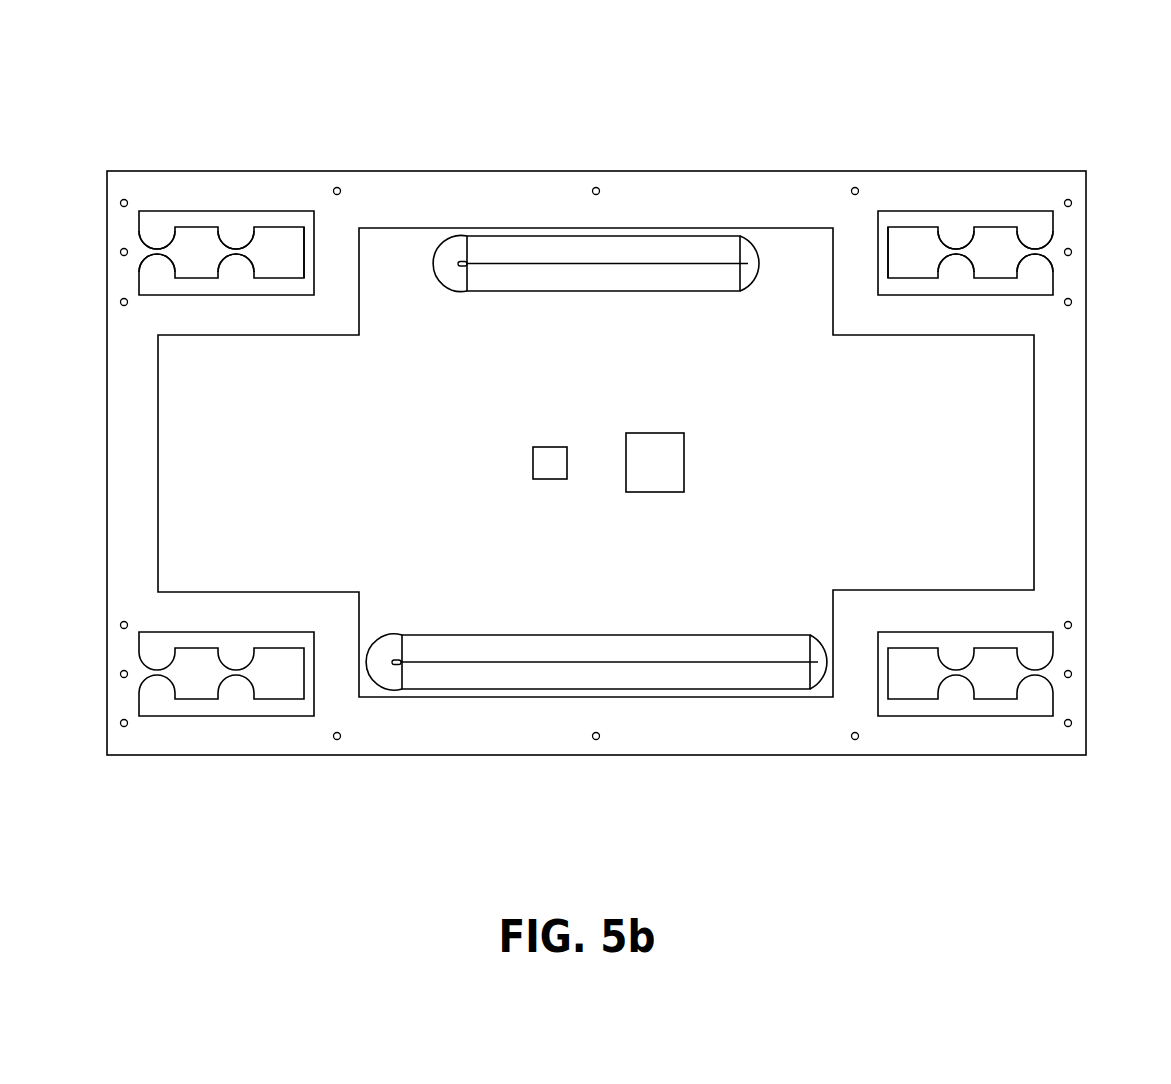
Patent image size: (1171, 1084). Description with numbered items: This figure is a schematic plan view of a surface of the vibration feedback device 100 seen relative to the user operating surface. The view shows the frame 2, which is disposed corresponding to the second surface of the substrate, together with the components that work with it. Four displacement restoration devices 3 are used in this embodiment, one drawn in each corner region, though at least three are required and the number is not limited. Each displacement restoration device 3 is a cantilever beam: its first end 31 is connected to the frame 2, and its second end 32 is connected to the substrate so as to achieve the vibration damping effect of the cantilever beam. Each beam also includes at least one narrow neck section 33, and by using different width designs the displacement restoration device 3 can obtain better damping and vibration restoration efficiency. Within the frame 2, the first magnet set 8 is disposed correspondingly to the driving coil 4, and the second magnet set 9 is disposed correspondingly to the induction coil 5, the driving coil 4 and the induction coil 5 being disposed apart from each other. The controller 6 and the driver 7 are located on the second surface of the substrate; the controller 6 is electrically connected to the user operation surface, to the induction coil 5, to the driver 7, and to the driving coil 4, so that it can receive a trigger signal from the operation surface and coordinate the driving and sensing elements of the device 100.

The vibration feedback device 100 is at (857, 107).
The frame 2 is at (645, 737).
The displacement restoration device 3 is at (264, 230).
The first end 31 is at (147, 252).
The second end 32 is at (308, 250).
The narrow neck section 33 is at (235, 253).
The driving coil 4 is at (748, 263).
The induction coil 5 is at (818, 662).
The controller 6 is at (547, 458).
The driver 7 is at (656, 452).
The first magnet set 8 is at (579, 279).
The second magnet set 9 is at (585, 655).